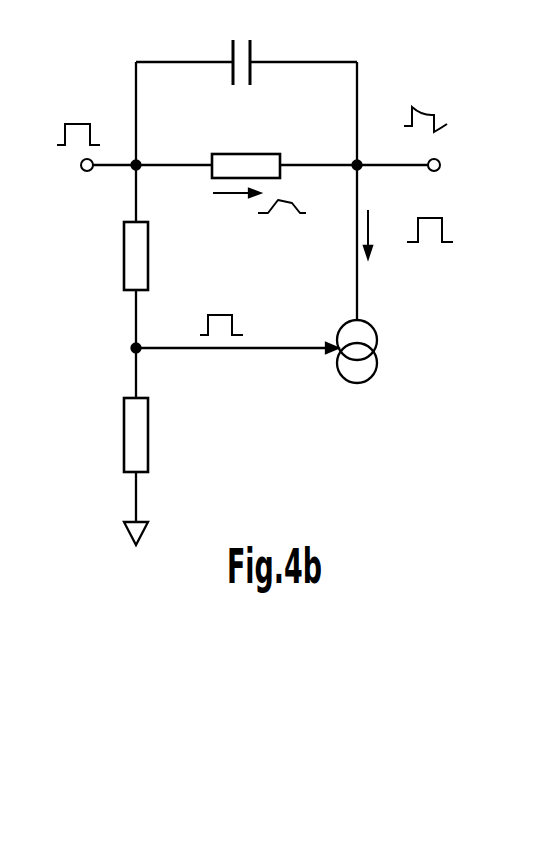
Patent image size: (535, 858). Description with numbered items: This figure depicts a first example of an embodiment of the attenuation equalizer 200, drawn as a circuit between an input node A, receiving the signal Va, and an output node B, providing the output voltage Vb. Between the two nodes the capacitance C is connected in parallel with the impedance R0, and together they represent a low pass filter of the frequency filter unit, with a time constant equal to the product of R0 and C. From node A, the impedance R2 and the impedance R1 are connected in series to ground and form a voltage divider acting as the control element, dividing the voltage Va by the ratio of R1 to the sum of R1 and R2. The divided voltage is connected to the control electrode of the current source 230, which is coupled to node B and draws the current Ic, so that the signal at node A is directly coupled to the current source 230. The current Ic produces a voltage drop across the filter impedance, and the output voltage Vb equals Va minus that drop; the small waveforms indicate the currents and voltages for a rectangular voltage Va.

The attenuation equalizer 200 is at (255, 272).
The current source 230 is at (377, 361).
The capacitance C is at (241, 47).
The impedance R0 is at (246, 153).
The impedance R1 is at (155, 435).
The impedance R2 is at (155, 256).